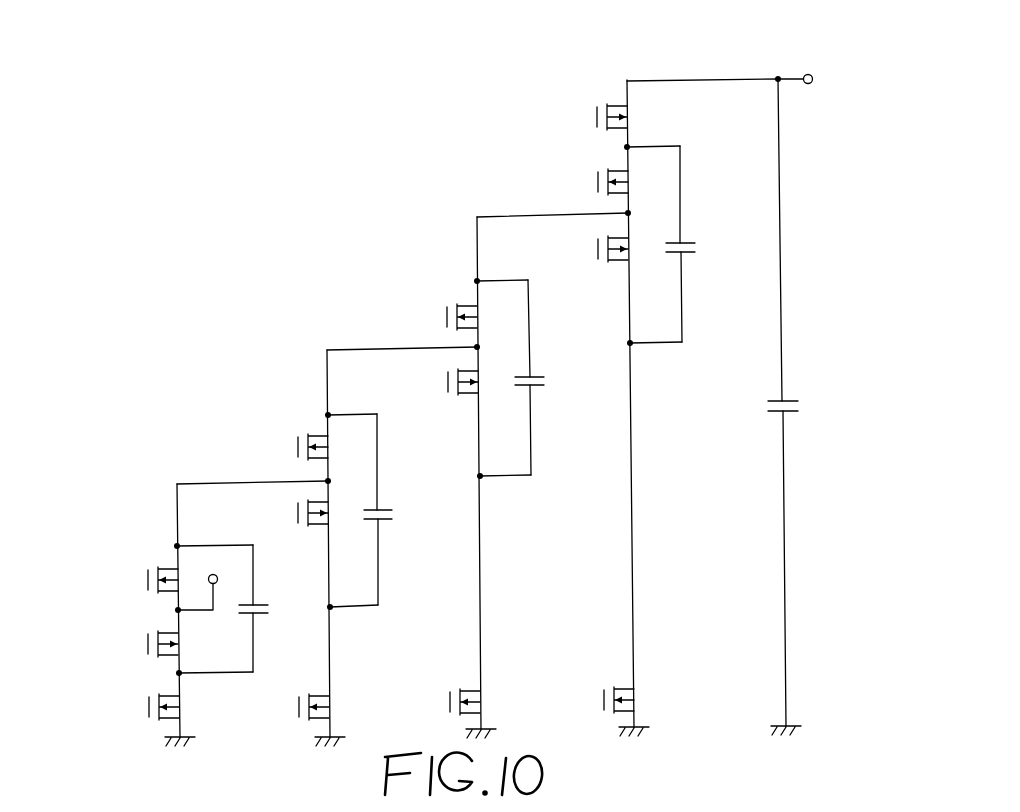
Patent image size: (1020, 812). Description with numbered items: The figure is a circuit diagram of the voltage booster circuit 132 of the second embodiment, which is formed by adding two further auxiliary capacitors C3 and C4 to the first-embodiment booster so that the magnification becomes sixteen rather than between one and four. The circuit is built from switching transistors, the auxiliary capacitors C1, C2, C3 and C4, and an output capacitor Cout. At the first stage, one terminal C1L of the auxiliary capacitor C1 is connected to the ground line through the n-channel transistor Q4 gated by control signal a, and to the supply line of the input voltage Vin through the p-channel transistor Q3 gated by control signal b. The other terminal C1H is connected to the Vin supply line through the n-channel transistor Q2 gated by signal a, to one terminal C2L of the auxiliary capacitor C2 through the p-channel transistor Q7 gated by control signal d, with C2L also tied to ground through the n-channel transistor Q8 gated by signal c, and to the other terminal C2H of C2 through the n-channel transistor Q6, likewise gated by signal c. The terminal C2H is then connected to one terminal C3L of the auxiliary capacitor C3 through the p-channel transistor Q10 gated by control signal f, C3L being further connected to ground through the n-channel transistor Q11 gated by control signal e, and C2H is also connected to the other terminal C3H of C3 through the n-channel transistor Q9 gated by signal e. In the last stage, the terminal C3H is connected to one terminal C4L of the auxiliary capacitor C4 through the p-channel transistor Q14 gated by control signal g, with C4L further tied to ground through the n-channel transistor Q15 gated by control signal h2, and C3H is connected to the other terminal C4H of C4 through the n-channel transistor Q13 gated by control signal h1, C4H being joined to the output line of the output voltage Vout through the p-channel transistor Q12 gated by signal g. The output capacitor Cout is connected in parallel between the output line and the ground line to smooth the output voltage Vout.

The voltage booster circuit 132 is at (350, 50).
The n-channel transistor Q2 is at (165, 566).
The p-channel transistor Q3 is at (165, 630).
The n-channel transistor Q4 is at (166, 693).
The n-channel transistor Q6 is at (316, 433).
The p-channel transistor Q7 is at (318, 526).
The n-channel transistor Q8 is at (317, 693).
The n-channel transistor Q9 is at (465, 303).
The p-channel transistor Q10 is at (455, 395).
The n-channel transistor Q11 is at (468, 688).
The p-channel transistor Q12 is at (615, 103).
The n-channel transistor Q13 is at (615, 168).
The p-channel transistor Q14 is at (617, 262).
The n-channel transistor Q15 is at (622, 686).
The auxiliary capacitor C1 is at (255, 604).
The auxiliary capacitor C2 is at (383, 506).
The auxiliary capacitor C3 is at (535, 373).
The auxiliary capacitor C4 is at (689, 242).
The output capacitor Cout is at (773, 401).
The terminal of auxiliary capacitor C1 C1H is at (242, 544).
The terminal of auxiliary capacitor C1 C1L is at (242, 670).
The terminal of auxiliary capacitor C2 C2H is at (379, 452).
The terminal of auxiliary capacitor C2 C2L is at (379, 543).
The terminal of auxiliary capacitor C3 C3H is at (530, 320).
The terminal of auxiliary capacitor C3 C3L is at (531, 409).
The terminal of auxiliary capacitor C4 C4H is at (676, 146).
The terminal of auxiliary capacitor C4 C4L is at (676, 346).
The input voltage Vin is at (201, 582).
The output voltage Vout is at (729, 67).
The control signal a is at (148, 580).
The control signal b is at (148, 644).
The control signal c is at (298, 447).
The control signal d is at (298, 513).
The control signal e is at (447, 317).
The control signal f is at (448, 382).
The control signal g is at (597, 117).
The control signal h1 is at (598, 182).
The control signal h2 is at (604, 700).